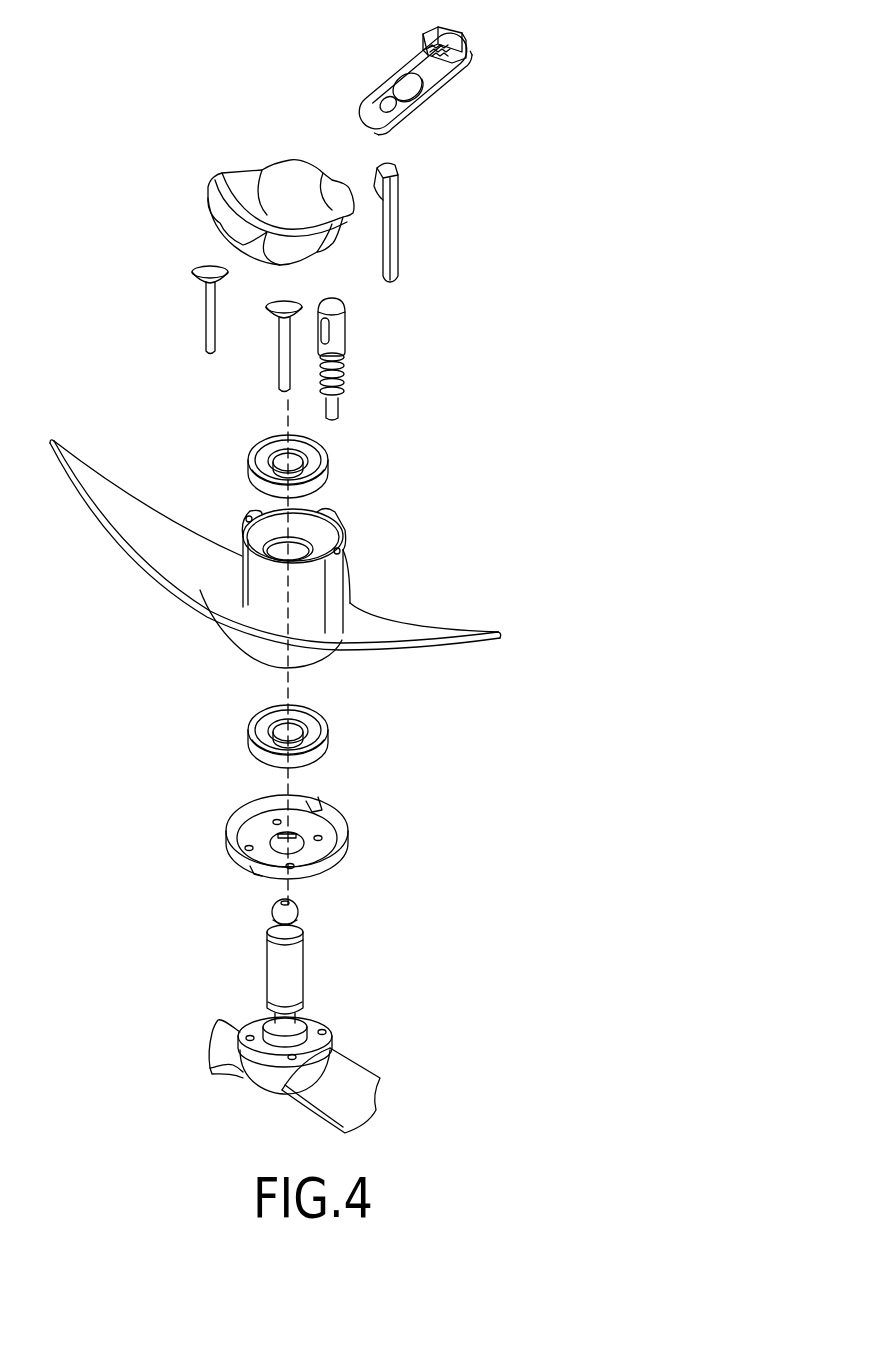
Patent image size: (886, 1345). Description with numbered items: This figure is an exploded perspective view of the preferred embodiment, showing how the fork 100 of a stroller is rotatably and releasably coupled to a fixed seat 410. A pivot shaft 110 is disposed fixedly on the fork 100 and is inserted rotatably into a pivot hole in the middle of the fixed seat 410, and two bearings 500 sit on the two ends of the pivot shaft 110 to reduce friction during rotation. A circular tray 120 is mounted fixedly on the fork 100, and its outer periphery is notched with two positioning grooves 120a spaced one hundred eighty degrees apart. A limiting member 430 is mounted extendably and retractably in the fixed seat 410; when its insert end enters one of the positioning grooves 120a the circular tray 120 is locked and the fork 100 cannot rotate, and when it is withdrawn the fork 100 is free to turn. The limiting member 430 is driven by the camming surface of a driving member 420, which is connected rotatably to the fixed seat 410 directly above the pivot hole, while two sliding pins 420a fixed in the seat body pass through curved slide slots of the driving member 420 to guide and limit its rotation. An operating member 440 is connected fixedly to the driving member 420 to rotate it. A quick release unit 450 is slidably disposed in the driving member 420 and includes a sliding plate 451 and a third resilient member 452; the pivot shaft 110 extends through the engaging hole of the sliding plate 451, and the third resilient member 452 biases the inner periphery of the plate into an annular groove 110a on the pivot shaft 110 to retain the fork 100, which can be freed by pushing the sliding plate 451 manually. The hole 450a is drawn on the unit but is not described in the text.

The fork 100 is at (225, 1055).
The pivot shaft 110 is at (287, 1005).
The annular groove 110a is at (300, 921).
The circular tray 120 is at (342, 848).
The positioning groove 120a is at (315, 808).
The fixed seat 410 is at (337, 598).
The driving member 420 is at (243, 213).
The sliding pin 420a is at (283, 333).
The limiting member 430 is at (338, 342).
The operating member 440 is at (397, 245).
The quick release unit 450 is at (440, 78).
The hole of tag plate 450a is at (398, 88).
The sliding plate 451 is at (410, 72).
The third resilient member 452 is at (424, 56).
The bearing 500 is at (328, 457).